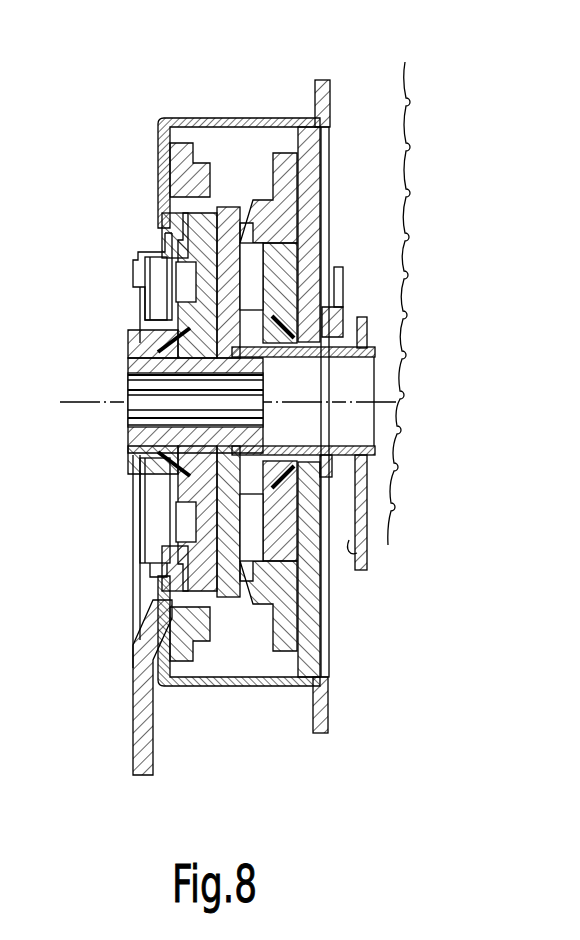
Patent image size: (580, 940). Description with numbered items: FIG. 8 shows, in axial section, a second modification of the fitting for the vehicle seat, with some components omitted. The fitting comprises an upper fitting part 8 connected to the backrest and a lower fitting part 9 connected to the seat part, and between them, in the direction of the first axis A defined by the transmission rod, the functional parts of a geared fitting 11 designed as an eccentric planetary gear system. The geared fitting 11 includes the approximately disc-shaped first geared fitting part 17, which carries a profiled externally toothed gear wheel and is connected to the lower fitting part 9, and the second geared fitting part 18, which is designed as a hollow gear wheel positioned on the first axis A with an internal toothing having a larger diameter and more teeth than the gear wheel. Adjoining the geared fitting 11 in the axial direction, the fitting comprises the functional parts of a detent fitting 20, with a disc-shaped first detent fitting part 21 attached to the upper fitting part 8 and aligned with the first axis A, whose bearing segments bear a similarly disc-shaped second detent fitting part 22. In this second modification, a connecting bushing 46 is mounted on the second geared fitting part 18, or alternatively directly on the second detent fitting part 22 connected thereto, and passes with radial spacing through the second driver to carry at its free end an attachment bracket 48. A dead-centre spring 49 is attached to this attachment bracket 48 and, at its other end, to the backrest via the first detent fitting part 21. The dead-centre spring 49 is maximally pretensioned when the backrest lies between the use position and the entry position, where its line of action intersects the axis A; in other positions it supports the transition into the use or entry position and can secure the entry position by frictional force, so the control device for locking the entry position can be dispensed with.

The upper fitting part 8 is at (325, 100).
The lower fitting part 9 is at (143, 712).
The geared fitting 11 is at (206, 138).
The first geared fitting part 17 is at (230, 273).
The second geared fitting part 18 is at (175, 258).
The detent fitting 20 is at (281, 136).
The first detent fitting part 21 is at (310, 148).
The second detent fitting part 22 is at (285, 180).
The connecting bushing 46 is at (340, 358).
The attachment bracket 48 is at (363, 516).
The dead-centre spring 49 is at (415, 258).
The first axis A is at (78, 401).